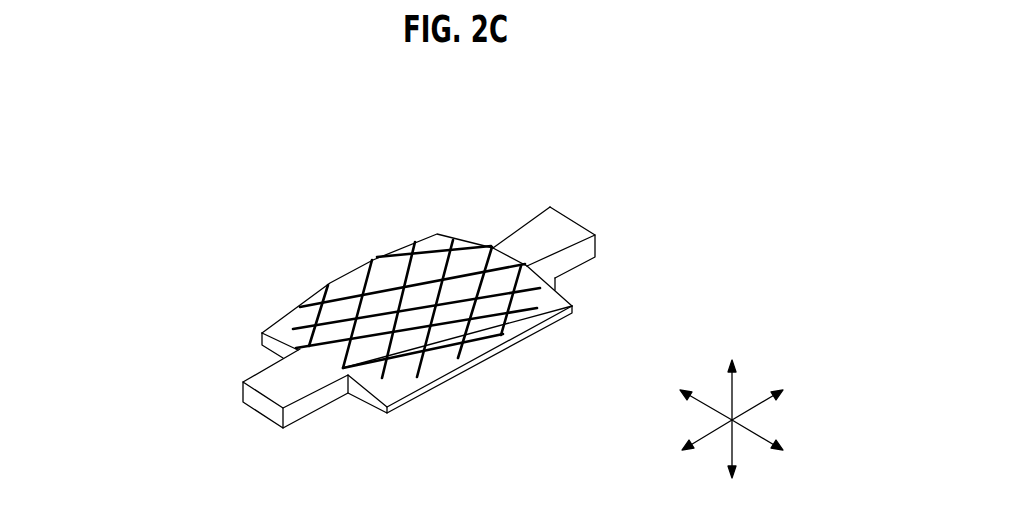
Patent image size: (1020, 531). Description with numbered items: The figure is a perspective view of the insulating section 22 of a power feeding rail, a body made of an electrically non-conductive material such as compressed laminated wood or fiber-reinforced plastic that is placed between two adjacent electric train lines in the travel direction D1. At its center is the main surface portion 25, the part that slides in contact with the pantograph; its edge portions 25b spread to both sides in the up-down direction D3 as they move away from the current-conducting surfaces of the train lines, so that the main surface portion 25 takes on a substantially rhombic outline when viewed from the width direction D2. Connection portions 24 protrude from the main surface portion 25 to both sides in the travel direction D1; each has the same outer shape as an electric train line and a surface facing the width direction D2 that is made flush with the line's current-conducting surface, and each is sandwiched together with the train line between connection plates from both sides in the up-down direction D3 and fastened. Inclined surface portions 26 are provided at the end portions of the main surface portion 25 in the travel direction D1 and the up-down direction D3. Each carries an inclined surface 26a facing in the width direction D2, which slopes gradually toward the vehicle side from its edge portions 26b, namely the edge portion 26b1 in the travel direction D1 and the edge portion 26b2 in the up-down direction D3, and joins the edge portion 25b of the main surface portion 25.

The insulating section 22 is at (613, 174).
The connection portion 24 is at (565, 219).
The main surface portion 25 is at (358, 270).
The edge portion 25b is at (308, 292).
The inclined surface portion 26 is at (419, 295).
The inclined surface 26a is at (440, 232).
The edge portion 26b is at (419, 295).
The edge portion in the travel direction 26b1 is at (447, 232).
The edge portion in the up-down direction 26b2 is at (413, 233).
The travel direction D1 is at (758, 407).
The width direction D2 is at (733, 395).
The up-down direction D3 is at (752, 437).